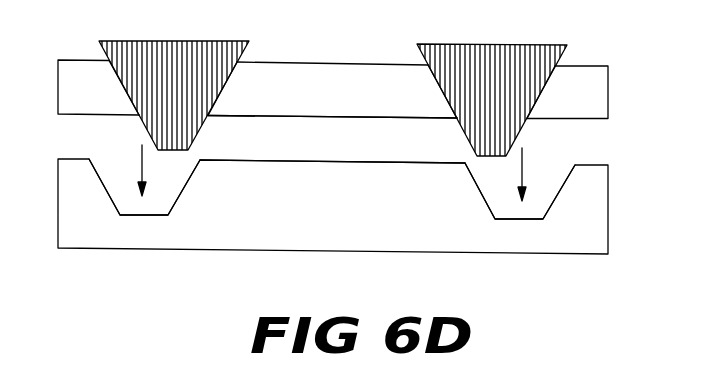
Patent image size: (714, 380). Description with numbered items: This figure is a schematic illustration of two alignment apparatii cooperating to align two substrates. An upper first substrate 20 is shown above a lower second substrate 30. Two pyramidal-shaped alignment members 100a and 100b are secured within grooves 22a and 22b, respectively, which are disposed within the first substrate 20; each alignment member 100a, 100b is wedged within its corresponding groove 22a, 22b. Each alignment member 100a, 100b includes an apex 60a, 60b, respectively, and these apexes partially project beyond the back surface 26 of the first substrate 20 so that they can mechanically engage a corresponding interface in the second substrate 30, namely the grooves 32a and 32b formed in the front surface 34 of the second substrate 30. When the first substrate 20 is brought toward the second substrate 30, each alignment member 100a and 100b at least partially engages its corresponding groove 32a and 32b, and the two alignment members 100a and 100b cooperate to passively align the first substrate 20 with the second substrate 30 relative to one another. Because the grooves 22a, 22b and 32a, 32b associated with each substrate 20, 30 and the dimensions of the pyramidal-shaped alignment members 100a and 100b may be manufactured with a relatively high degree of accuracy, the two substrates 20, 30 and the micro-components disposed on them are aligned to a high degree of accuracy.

The first substrate 20 is at (337, 98).
The groove 22a is at (222, 80).
The groove 22b is at (540, 92).
The back surface 26 is at (287, 117).
The second substrate 30 is at (328, 226).
The groove 32a is at (186, 185).
The groove 32b is at (571, 174).
The front surface 34 is at (367, 163).
The apex 60a is at (150, 131).
The apex 60b is at (468, 137).
The alignment member 100a is at (182, 92).
The alignment member 100b is at (498, 93).